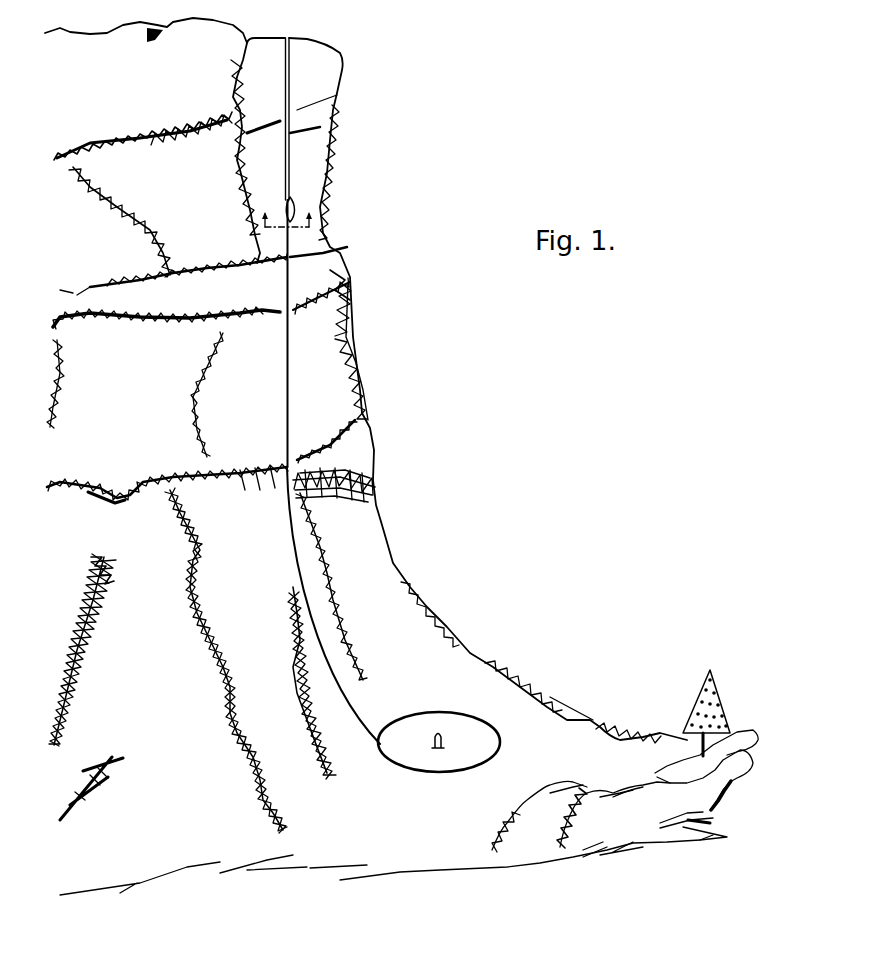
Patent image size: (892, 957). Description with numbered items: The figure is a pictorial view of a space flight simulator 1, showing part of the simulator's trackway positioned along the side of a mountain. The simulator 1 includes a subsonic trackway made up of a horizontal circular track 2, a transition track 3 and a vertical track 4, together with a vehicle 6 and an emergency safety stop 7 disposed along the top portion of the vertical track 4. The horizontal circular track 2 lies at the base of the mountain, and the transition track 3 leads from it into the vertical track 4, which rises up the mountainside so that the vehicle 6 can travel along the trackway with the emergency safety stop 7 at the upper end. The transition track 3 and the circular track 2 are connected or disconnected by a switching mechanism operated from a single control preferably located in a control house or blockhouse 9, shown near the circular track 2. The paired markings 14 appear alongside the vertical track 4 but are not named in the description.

The space flight simulator 1 is at (400, 481).
The horizontal circular track 2 is at (448, 772).
The transition track 3 is at (361, 727).
The vertical track 4 is at (287, 273).
The vehicle 6 is at (291, 197).
The emergency safety stop 7 is at (290, 68).
The control house or blockhouse 9 is at (436, 737).
The span indication 14 is at (291, 208).